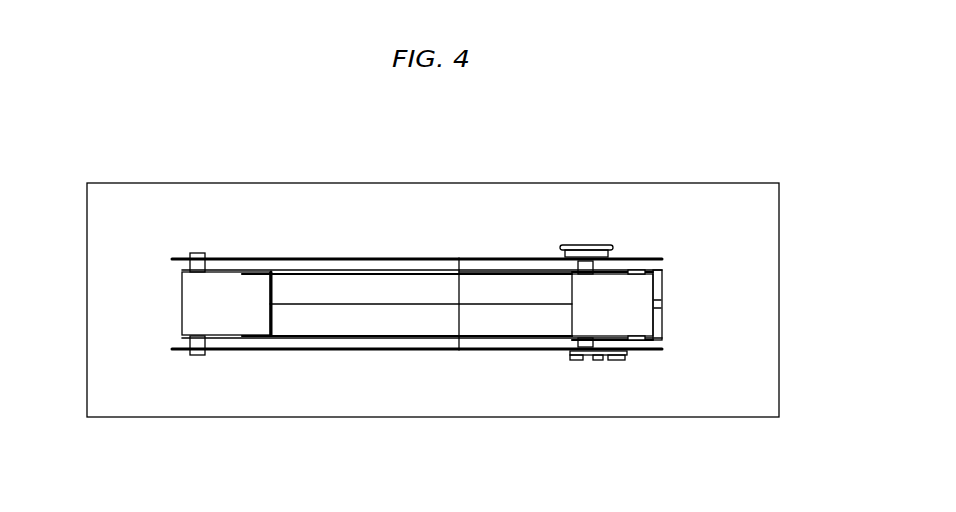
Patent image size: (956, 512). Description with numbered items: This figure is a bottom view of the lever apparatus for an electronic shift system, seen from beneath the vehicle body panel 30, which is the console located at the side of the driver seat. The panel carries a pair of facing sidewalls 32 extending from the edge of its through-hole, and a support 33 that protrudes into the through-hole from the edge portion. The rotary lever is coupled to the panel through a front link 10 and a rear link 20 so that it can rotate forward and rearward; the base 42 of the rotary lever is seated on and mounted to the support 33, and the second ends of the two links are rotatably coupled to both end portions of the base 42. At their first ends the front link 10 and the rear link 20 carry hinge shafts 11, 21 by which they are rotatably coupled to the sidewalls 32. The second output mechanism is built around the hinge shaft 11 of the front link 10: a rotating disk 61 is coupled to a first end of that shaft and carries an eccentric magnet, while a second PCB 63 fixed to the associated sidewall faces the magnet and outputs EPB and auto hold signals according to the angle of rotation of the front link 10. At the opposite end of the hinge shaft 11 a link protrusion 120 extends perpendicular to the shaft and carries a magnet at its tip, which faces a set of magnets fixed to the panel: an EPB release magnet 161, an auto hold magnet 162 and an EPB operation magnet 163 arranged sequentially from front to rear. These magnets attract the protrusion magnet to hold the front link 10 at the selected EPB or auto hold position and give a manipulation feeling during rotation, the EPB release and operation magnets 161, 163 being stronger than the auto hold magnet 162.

The front link 10 is at (633, 297).
The hinge shaft 11 is at (643, 342).
The rear link 20 is at (197, 310).
The hinge shaft 21 is at (197, 251).
The vehicle body panel 30 is at (333, 200).
The sidewalls 32 is at (528, 256).
The support 33 is at (392, 323).
The base 42 is at (475, 288).
The rotating disk 61 is at (575, 243).
The second PCB 63 is at (608, 243).
The link protrusion 120 is at (608, 357).
The EPB release magnet 161 is at (617, 358).
The auto hold magnet 162 is at (598, 358).
The EPB operation magnet 163 is at (577, 358).